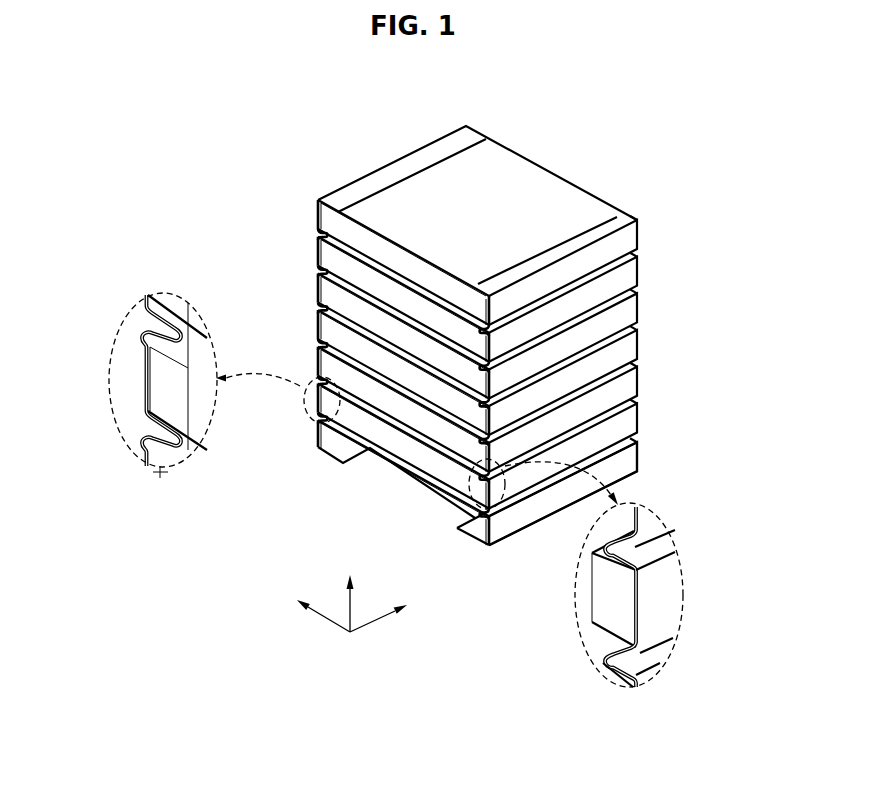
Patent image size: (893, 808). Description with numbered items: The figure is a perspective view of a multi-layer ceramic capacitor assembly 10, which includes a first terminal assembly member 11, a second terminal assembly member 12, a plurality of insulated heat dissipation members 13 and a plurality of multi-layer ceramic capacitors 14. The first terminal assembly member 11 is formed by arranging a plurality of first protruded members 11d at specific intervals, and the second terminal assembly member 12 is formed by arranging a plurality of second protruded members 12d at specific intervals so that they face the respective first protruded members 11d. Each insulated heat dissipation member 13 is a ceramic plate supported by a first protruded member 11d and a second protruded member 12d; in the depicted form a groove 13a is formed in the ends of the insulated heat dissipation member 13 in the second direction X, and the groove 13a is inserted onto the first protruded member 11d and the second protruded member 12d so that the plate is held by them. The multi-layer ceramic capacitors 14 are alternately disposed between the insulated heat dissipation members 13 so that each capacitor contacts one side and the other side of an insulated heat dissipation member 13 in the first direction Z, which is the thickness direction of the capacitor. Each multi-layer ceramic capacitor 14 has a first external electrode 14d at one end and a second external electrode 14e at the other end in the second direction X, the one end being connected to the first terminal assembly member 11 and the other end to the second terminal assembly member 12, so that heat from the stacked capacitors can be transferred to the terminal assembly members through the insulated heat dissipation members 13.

The multi-layer ceramic capacitor assembly 10 is at (662, 297).
The first terminal assembly member 11 is at (316, 428).
The first protruded member 11d is at (178, 472).
The second terminal assembly member 12 is at (600, 464).
The second protruded member 12d is at (672, 653).
The insulated heat dissipation member 13 is at (345, 249).
The groove 13a is at (200, 444).
The multi-layer ceramic capacitor 14 is at (352, 231).
The first external electrode 14d is at (145, 388).
The second external electrode 14e is at (610, 592).